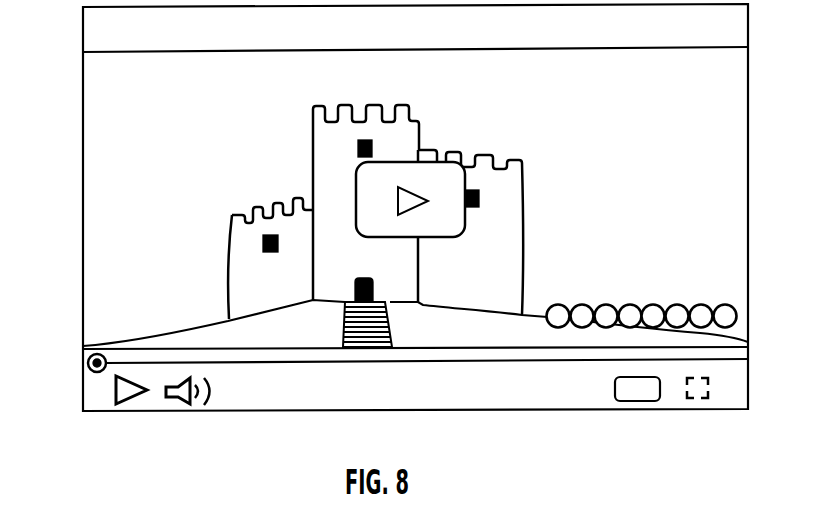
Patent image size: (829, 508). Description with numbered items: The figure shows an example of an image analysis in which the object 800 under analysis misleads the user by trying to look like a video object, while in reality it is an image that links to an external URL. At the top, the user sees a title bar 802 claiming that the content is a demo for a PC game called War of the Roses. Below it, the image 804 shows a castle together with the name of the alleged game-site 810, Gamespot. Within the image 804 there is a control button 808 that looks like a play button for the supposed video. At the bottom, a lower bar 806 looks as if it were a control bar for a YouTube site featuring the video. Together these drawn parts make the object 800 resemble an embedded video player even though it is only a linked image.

The object under analysis 800 is at (78, 437).
The title bar 802 is at (83, 32).
The image 804 is at (83, 181).
The lower bar 806 is at (83, 382).
The control button 808 is at (445, 239).
The alleged game-site name 810 is at (650, 303).